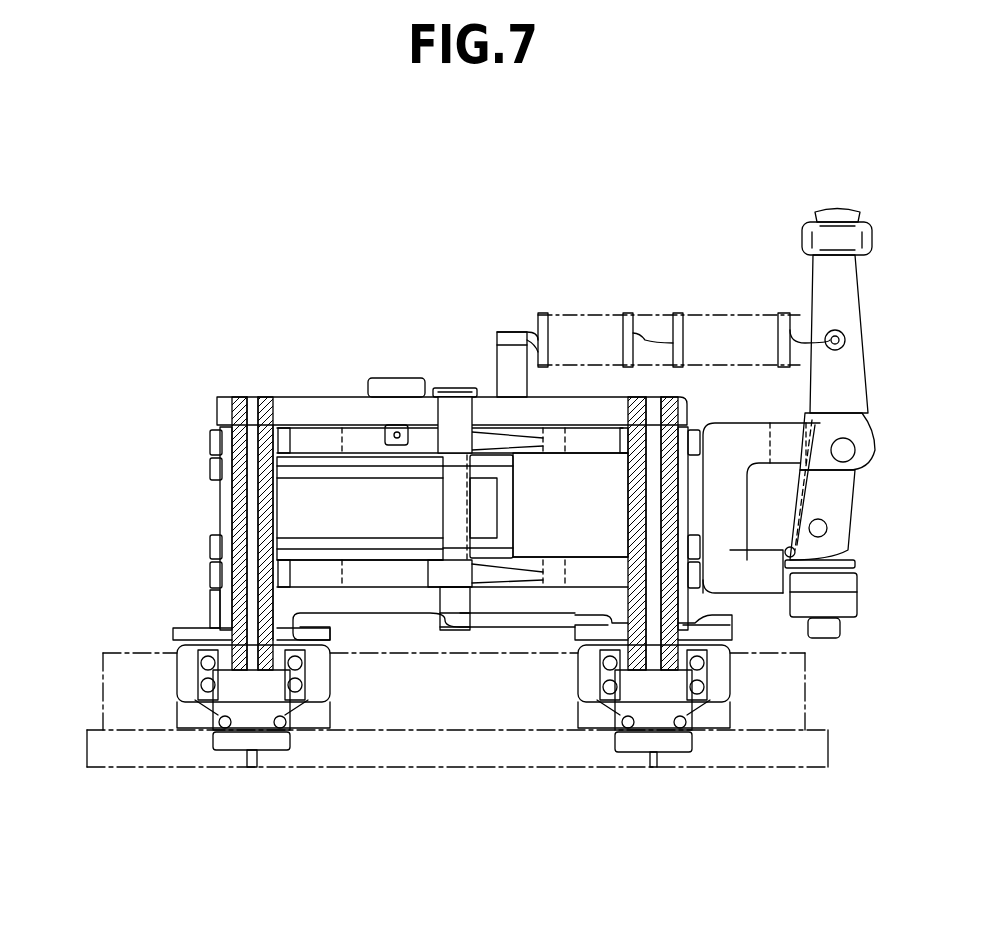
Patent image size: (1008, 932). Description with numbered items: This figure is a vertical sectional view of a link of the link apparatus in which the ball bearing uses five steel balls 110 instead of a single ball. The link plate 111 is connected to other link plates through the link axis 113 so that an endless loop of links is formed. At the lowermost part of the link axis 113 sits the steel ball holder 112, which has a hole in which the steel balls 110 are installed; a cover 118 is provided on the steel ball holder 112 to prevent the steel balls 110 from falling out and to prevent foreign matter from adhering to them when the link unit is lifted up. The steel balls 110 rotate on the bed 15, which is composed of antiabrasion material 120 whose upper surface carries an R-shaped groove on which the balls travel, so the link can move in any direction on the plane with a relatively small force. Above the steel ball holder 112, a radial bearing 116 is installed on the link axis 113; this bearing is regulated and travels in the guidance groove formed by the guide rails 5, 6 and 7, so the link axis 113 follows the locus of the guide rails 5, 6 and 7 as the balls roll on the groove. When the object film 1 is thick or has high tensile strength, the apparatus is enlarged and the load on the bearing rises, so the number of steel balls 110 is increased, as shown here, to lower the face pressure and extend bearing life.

The object film 1 is at (768, 568).
The guide rail 5 is at (450, 713).
The guide rail 6 is at (125, 690).
The guide rail 7 is at (787, 702).
The bed 15 is at (773, 753).
The steel ball 110 is at (670, 730).
The link plate 111 is at (307, 415).
The steel ball holder 112 is at (645, 722).
The link axis 113 is at (240, 518).
The radial bearing 116 is at (155, 638).
The cover 118 is at (597, 720).
The antiabrasion material 120 is at (230, 740).